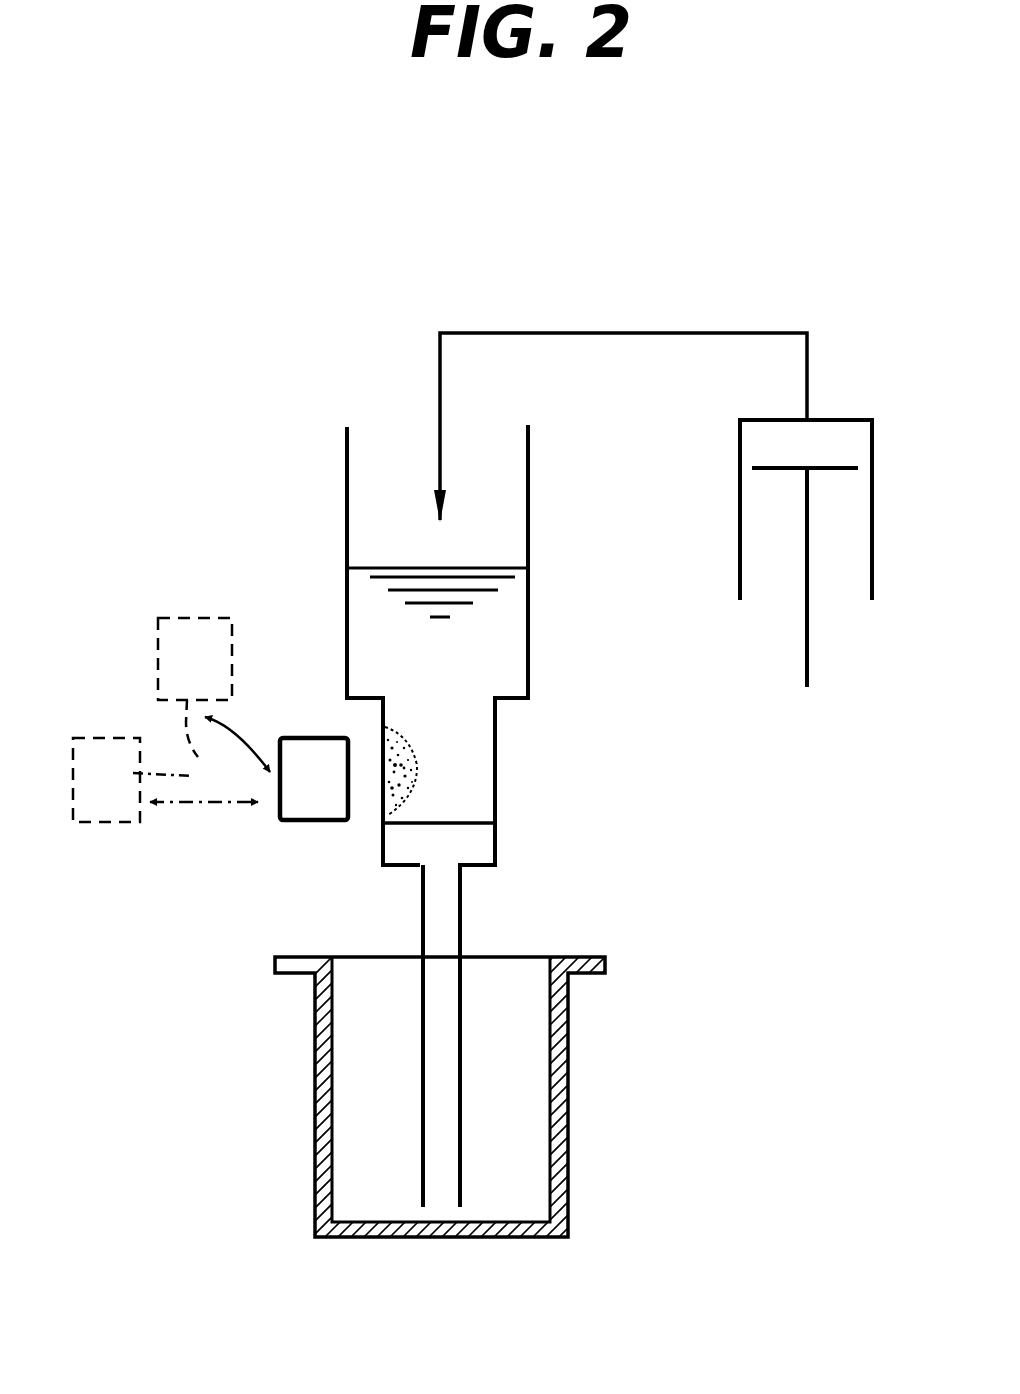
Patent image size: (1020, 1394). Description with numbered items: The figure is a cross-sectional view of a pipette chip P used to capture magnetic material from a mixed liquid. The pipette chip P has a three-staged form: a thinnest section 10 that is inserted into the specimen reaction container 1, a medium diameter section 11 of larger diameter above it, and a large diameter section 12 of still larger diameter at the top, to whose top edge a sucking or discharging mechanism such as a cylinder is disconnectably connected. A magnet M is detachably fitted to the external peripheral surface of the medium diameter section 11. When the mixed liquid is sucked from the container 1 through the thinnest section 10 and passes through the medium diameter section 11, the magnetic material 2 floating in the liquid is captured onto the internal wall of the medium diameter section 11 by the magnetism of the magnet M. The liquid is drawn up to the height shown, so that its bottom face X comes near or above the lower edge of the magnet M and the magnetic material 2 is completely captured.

The specimen reaction container 1 is at (574, 1063).
The magnetic material 2 is at (385, 727).
The thinnest section 10 is at (420, 1040).
The medium diameter section 11 is at (497, 838).
The large diameter section 12 is at (533, 670).
The pipette chip P is at (537, 587).
The magnet M is at (278, 792).
The bottom face X is at (200, 753).